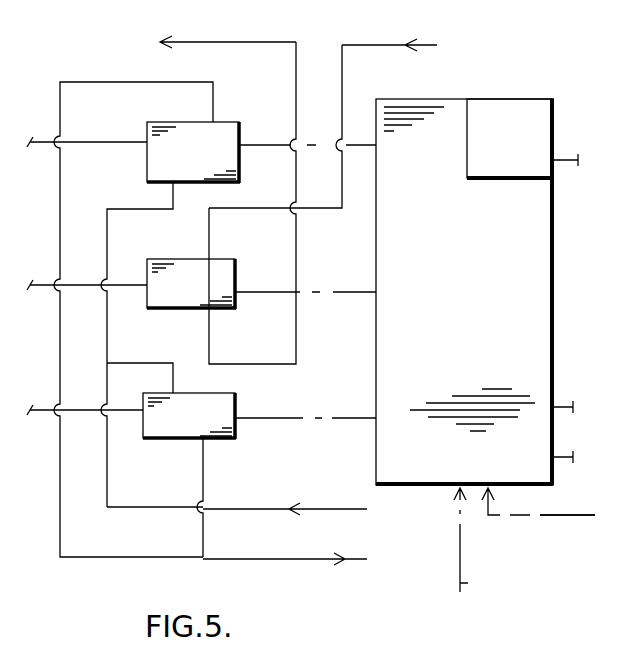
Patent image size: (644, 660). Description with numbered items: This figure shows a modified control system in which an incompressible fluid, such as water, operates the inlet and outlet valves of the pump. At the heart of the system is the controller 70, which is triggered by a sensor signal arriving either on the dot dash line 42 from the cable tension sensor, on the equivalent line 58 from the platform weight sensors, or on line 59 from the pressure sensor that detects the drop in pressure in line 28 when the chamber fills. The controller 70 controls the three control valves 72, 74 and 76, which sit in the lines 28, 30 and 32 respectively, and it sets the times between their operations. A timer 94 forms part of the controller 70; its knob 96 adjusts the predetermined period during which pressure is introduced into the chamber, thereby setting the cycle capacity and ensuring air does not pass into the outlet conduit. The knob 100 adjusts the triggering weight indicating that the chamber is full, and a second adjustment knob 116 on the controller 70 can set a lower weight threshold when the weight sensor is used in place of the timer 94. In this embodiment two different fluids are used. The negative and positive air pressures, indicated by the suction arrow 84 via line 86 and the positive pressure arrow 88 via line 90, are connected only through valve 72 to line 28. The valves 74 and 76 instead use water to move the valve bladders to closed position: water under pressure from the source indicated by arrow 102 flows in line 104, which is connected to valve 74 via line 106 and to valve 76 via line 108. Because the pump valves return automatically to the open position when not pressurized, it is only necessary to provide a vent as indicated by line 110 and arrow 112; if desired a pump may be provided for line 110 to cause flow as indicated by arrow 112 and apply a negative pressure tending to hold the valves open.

The controller 70 is at (468, 357).
The timer 94 is at (522, 169).
The knob 96 is at (565, 160).
The knob 116 is at (563, 407).
The knob 100 is at (563, 459).
The control valve 76 is at (205, 162).
The control valve 72 is at (205, 293).
The control valve 74 is at (202, 428).
The line 32 is at (96, 140).
The line 28 is at (32, 283).
The line 30 is at (34, 408).
The vent line 110 is at (180, 557).
The line 108 is at (126, 209).
The line 106 is at (134, 363).
The line 104 is at (140, 507).
The source of water under pressure 102 is at (355, 511).
The vent flow arrow 112 is at (355, 561).
The source of suction 84 is at (232, 47).
The line 86 is at (296, 102).
The source of air under positive pressure 88 is at (386, 47).
The line 90 is at (342, 92).
The line 59 is at (468, 583).
The dot dash line 42 is at (540, 516).
The line 58 is at (541, 545).